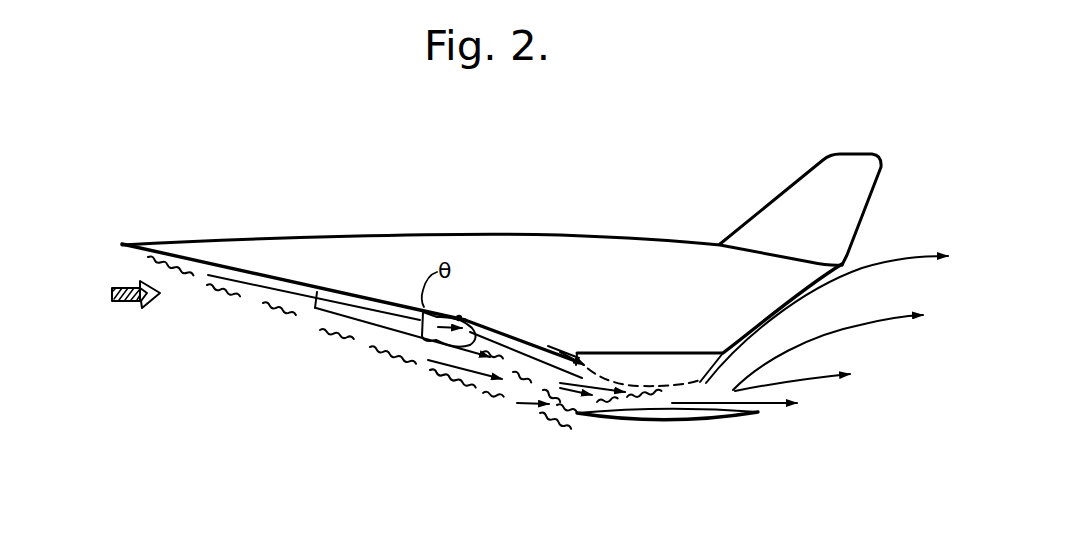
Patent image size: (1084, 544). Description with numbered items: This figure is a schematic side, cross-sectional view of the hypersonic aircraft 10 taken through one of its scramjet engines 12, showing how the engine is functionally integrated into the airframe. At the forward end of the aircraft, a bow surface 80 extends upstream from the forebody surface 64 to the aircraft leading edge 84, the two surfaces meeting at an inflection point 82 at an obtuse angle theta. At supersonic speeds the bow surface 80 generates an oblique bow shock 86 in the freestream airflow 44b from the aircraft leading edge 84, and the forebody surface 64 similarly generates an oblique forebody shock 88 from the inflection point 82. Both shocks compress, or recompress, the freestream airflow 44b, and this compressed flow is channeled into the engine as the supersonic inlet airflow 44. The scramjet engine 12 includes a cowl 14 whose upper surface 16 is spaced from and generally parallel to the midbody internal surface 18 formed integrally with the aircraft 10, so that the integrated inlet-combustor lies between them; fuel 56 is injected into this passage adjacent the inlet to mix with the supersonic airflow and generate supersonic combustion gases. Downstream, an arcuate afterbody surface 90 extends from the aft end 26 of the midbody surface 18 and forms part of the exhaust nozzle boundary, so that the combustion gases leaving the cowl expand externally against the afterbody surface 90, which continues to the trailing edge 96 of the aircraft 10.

The hypersonic aircraft 10 is at (508, 206).
The scramjet engine 12 is at (669, 461).
The cowl 14 is at (718, 420).
The cowl upper surface 16 is at (653, 420).
The midbody internal surface 18 is at (642, 352).
The aft end of midbody surface 26 is at (720, 352).
The supersonic inlet airflow 44 is at (556, 397).
The freestream airflow 44b is at (123, 302).
The fuel 56 is at (562, 351).
The forebody surface 64 is at (487, 336).
The bow surface 80 is at (316, 293).
The inflection point 82 is at (459, 316).
The aircraft leading edge 84 is at (122, 244).
The oblique bow shock 86 is at (298, 313).
The oblique forebody shock 88 is at (532, 396).
The afterbody surface 90 is at (790, 290).
The aircraft trailing edge 96 is at (860, 268).